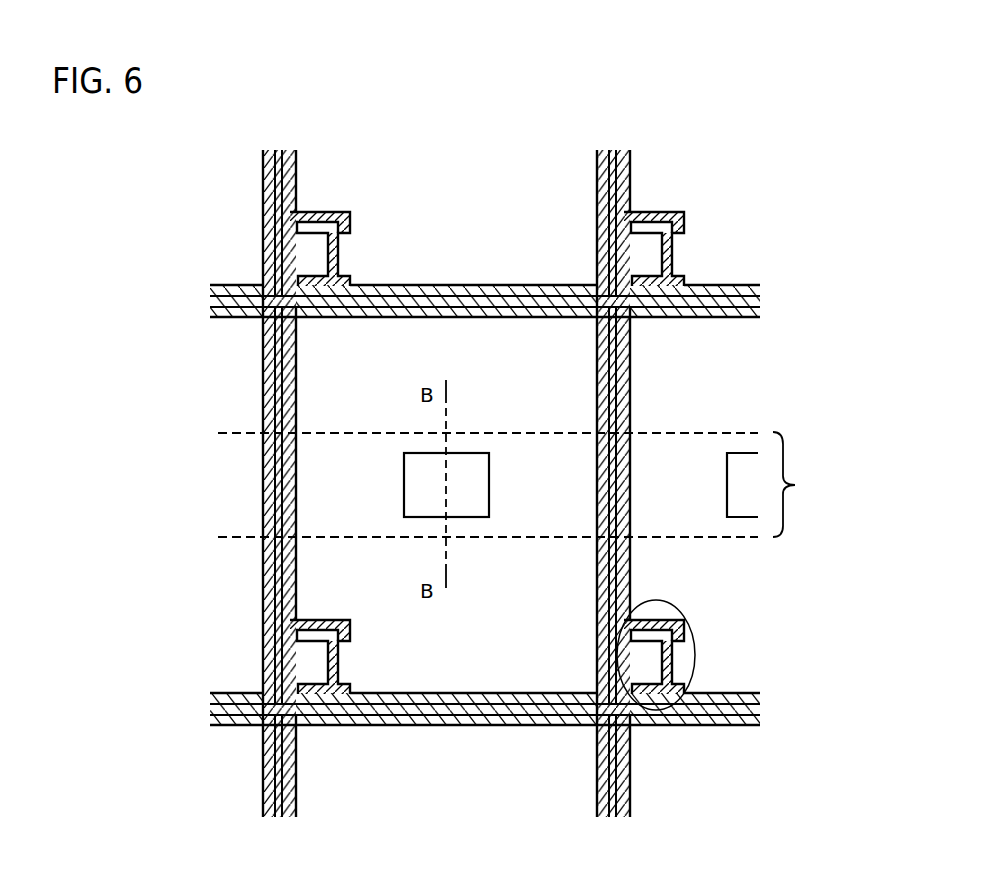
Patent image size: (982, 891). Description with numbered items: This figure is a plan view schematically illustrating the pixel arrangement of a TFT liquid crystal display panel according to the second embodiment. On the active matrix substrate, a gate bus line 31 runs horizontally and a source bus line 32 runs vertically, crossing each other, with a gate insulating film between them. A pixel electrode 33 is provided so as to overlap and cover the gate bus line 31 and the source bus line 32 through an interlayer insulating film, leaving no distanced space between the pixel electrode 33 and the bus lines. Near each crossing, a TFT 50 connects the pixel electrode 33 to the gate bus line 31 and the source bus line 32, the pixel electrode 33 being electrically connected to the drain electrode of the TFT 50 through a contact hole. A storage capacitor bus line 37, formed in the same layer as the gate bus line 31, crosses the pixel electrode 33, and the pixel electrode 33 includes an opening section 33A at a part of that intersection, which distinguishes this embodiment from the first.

The gate bus line 31 is at (733, 286).
The source bus line 32 is at (615, 150).
The pixel electrode 33 is at (438, 348).
The opening section 33A is at (489, 476).
The storage capacitor bus line 37 is at (526, 484).
The TFT 50 is at (694, 652).